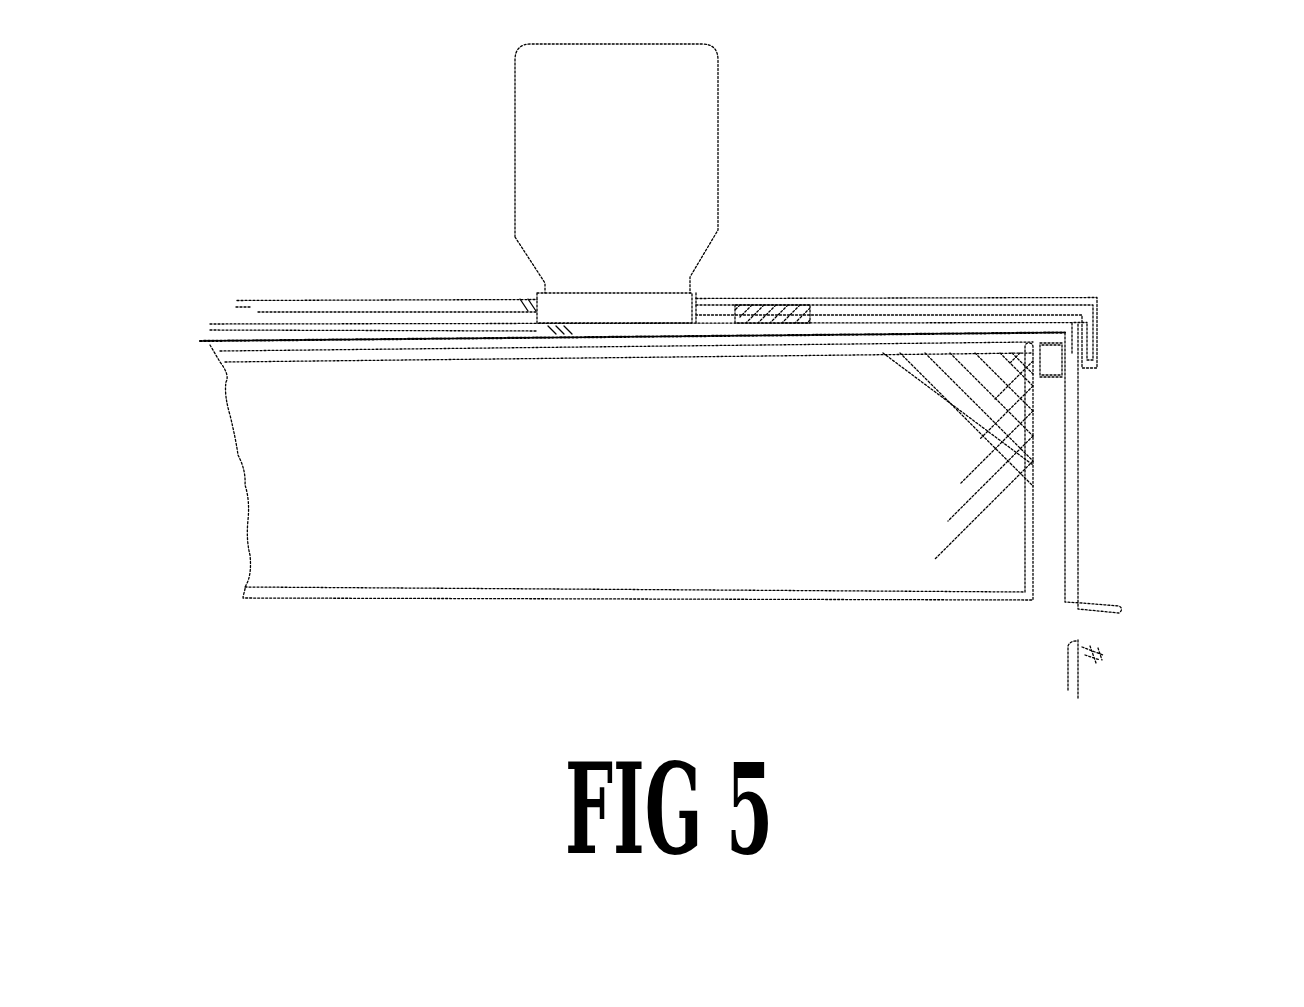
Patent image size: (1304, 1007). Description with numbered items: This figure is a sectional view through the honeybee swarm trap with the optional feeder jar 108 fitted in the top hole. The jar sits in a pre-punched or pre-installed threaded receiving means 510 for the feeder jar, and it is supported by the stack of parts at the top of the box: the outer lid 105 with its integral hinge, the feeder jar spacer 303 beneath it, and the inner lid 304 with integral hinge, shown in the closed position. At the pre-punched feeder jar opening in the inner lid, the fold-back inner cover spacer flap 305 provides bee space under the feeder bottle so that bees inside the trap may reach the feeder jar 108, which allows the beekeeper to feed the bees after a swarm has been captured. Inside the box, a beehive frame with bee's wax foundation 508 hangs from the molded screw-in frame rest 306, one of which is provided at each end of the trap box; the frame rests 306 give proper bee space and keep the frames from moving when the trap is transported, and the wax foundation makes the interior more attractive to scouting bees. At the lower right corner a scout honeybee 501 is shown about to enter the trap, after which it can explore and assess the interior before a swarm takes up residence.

The feeder jar 108 is at (719, 127).
The outer lid with integral hinge 105 is at (337, 296).
The feeder jar spacer 303 is at (463, 308).
The inner lid with integral hinge 304 is at (228, 307).
The inner cover spacer flap 305 is at (380, 362).
The frame rest 306 is at (1043, 378).
The scout honeybee 501 is at (707, 328).
The beehive frame with bee's wax foundation 508 is at (268, 420).
The threaded receiving means for the feeder jar 510 is at (536, 292).